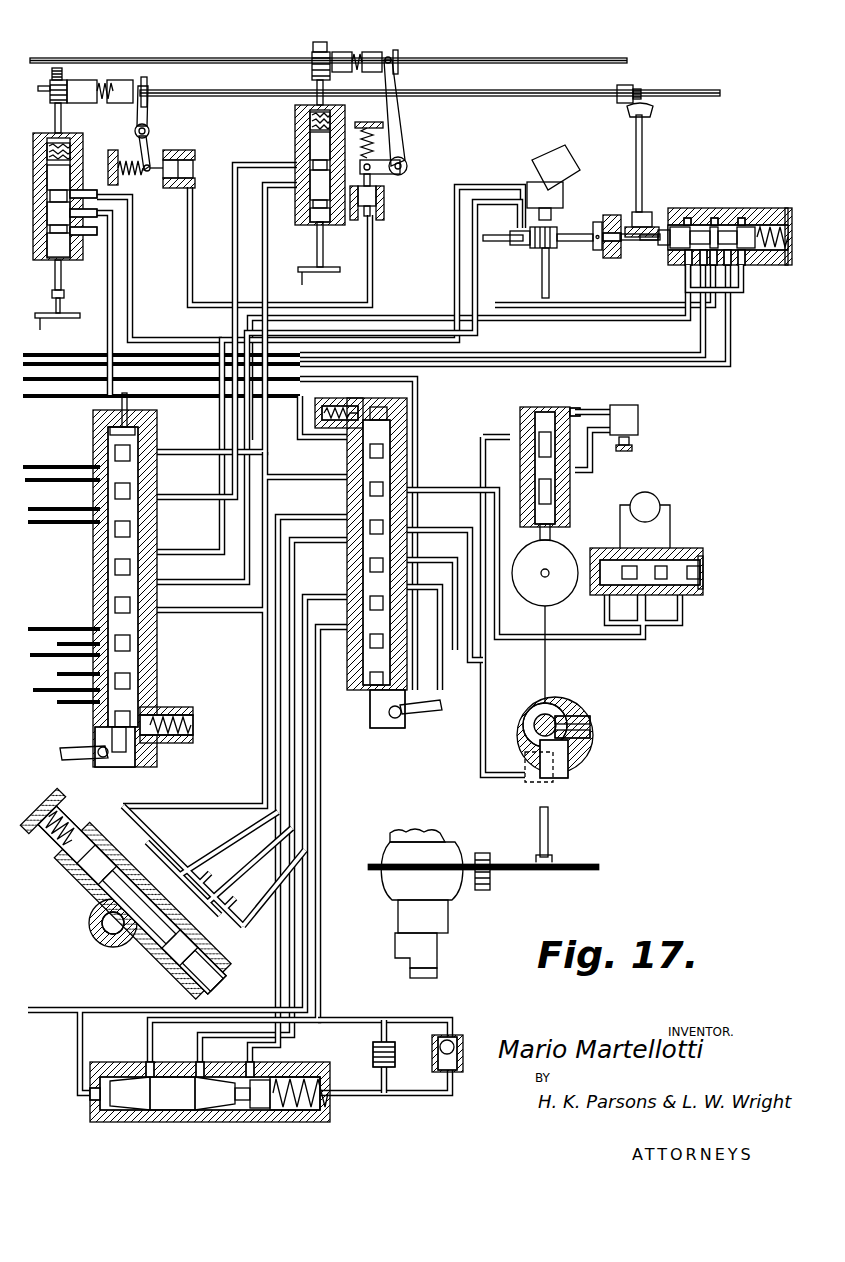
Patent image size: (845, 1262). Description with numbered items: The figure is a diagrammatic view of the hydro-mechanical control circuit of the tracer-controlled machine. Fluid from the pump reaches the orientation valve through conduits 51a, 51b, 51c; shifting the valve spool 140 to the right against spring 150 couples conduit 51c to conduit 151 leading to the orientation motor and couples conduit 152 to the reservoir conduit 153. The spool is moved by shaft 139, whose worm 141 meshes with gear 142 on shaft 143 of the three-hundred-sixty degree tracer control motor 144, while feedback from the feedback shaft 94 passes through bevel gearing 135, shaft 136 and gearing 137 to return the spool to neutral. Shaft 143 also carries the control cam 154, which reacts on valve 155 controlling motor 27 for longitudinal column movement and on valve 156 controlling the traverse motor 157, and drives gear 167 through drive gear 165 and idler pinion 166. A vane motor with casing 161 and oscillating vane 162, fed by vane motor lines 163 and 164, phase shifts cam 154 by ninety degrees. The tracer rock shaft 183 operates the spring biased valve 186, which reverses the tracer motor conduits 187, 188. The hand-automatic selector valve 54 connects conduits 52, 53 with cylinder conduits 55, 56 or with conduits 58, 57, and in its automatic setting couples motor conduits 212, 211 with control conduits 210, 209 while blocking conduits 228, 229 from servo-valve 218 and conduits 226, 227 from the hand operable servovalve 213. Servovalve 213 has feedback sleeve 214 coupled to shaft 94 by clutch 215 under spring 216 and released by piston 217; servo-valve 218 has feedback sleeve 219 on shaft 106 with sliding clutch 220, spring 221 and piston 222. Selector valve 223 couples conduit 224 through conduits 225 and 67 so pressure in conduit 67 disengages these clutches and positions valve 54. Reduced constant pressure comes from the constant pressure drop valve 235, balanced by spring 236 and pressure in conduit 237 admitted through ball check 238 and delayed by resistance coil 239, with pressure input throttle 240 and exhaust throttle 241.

The motor 27 is at (640, 418).
The main pressure line 51a is at (312, 648).
The pressure conduit 51b is at (420, 440).
The pressure conduit 51c is at (595, 305).
The conduit 52 is at (58, 673).
The conduit 53 is at (75, 640).
The hand-automatic selector valve 54 is at (158, 650).
The conduit 55 is at (60, 642).
The conduit 56 is at (45, 691).
The conduit 57 is at (97, 708).
The conduit 58 is at (30, 628).
The conduit 67 is at (192, 290).
The feedback shaft 94 is at (270, 96).
The shaft 106 is at (213, 58).
The bevel gearing 135 is at (640, 90).
The shaft 136 is at (646, 130).
The gearing 137 is at (647, 212).
The shaft 139 is at (648, 242).
The valve spool 140 is at (745, 265).
The worm 141 is at (528, 230).
The gear 142 is at (598, 222).
The shaft 143 is at (550, 276).
The 360 degree tracer control motor 144 is at (548, 160).
The spring 150 is at (772, 208).
The conduit 151 is at (728, 337).
The conduit 152 is at (72, 356).
The reservoir conduit 153 is at (672, 320).
The 360 degree control cam 154 is at (568, 546).
The valve 155 is at (560, 410).
The valve 156 is at (704, 573).
The traverse motor 157 is at (660, 520).
The casing 161 is at (598, 715).
The oscillating vane 162 is at (578, 712).
The vane motor line 163 is at (495, 766).
The vane motor line 164 is at (500, 690).
The drive gear 165 is at (605, 868).
The idler pinion 166 is at (486, 860).
The gear 167 is at (385, 862).
The rock shaft 183 is at (117, 946).
The spring biased valve 186 is at (78, 905).
The tracer motor conduit 187 is at (458, 190).
The tracer motor conduit 188 is at (240, 584).
The control conduit 209 is at (42, 483).
The control conduit 210 is at (45, 512).
The motor conduit 211 is at (55, 465).
The motor conduit 212 is at (32, 526).
The hand operable servovalve 213 is at (55, 262).
The feedback sleeve 214 is at (78, 82).
The clutch 215 is at (122, 82).
The spring 216 is at (130, 176).
The piston 217 is at (178, 158).
The servo-valve 218 is at (297, 142).
The feedback sleeve 219 is at (330, 52).
The sliding clutch 220 is at (382, 54).
The spring 221 is at (374, 152).
The piston 222 is at (378, 198).
The selector valve 223 is at (400, 415).
The conduit 224 is at (340, 820).
The conduit 225 is at (290, 590).
The control conduit 226 is at (113, 337).
The control conduit 227 is at (135, 318).
The conduit 228 is at (235, 175).
The conduit 229 is at (268, 265).
The constant pressure drop valve 235 is at (172, 1097).
The spring 236 is at (300, 1098).
The conduit 237 is at (366, 1020).
The ball check 238 is at (460, 1046).
The resistance coil 239 is at (388, 1062).
The pressure input throttle 240 is at (140, 1100).
The exhaust throttle 241 is at (215, 1090).